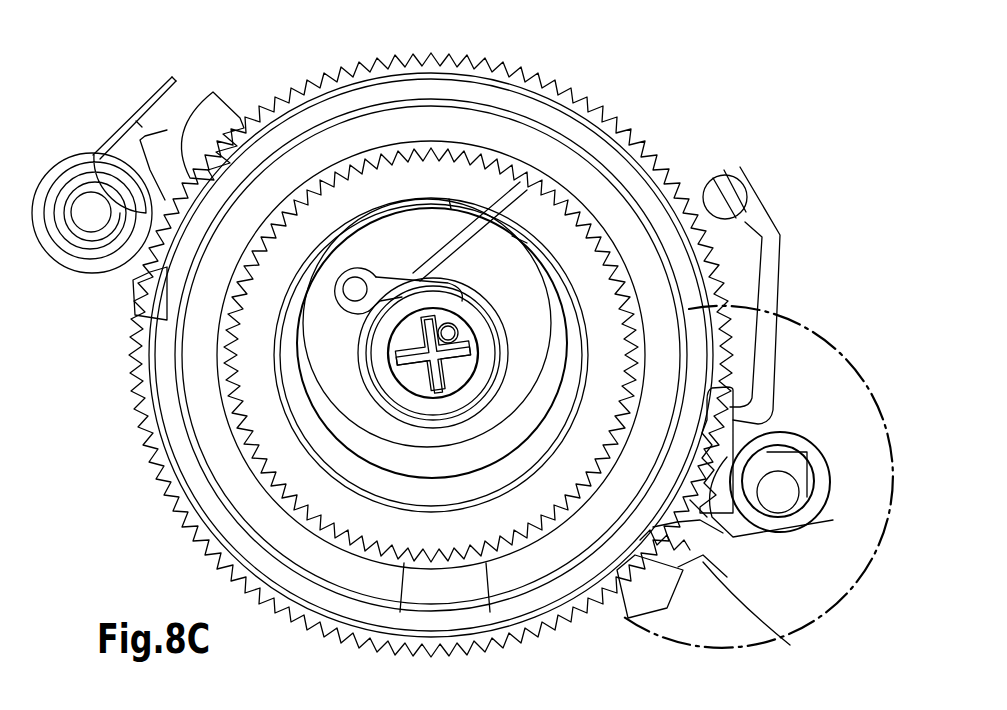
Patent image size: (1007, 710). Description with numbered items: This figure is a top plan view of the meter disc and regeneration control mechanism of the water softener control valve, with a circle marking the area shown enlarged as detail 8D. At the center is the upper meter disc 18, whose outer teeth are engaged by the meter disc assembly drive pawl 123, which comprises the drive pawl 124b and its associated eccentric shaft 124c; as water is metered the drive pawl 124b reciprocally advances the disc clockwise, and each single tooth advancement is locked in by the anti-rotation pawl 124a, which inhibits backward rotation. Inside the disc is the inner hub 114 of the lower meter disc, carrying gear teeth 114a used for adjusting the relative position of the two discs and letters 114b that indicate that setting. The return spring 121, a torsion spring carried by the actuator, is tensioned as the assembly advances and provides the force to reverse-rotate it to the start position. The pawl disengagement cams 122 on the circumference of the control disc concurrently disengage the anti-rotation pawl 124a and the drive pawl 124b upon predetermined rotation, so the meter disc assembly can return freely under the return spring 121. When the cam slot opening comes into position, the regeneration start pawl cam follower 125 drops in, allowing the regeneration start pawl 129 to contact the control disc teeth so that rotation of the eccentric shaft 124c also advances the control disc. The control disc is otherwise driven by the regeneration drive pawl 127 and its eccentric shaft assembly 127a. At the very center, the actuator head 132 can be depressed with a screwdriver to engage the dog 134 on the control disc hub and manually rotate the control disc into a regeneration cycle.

The upper meter disc 18 is at (570, 66).
The inner hub 114 is at (340, 495).
The gear teeth 114a is at (270, 476).
The letters 114b is at (240, 352).
The return spring 121 is at (450, 276).
The pawl disengagement cams 122 is at (198, 90).
The meter disc assembly drive pawl 123 is at (791, 408).
The anti-rotation pawl 124a is at (768, 275).
The drive pawl 124b is at (745, 565).
The eccentric shaft 124c is at (785, 487).
The regeneration start pawl cam follower 125 is at (652, 578).
The regeneration drive pawl 127 is at (112, 105).
The eccentric shaft assembly 127a is at (86, 210).
The regeneration start pawl 129 is at (733, 533).
The actuator head 132 is at (432, 338).
The dog 134 is at (558, 410).
The detail circle 8D is at (700, 648).